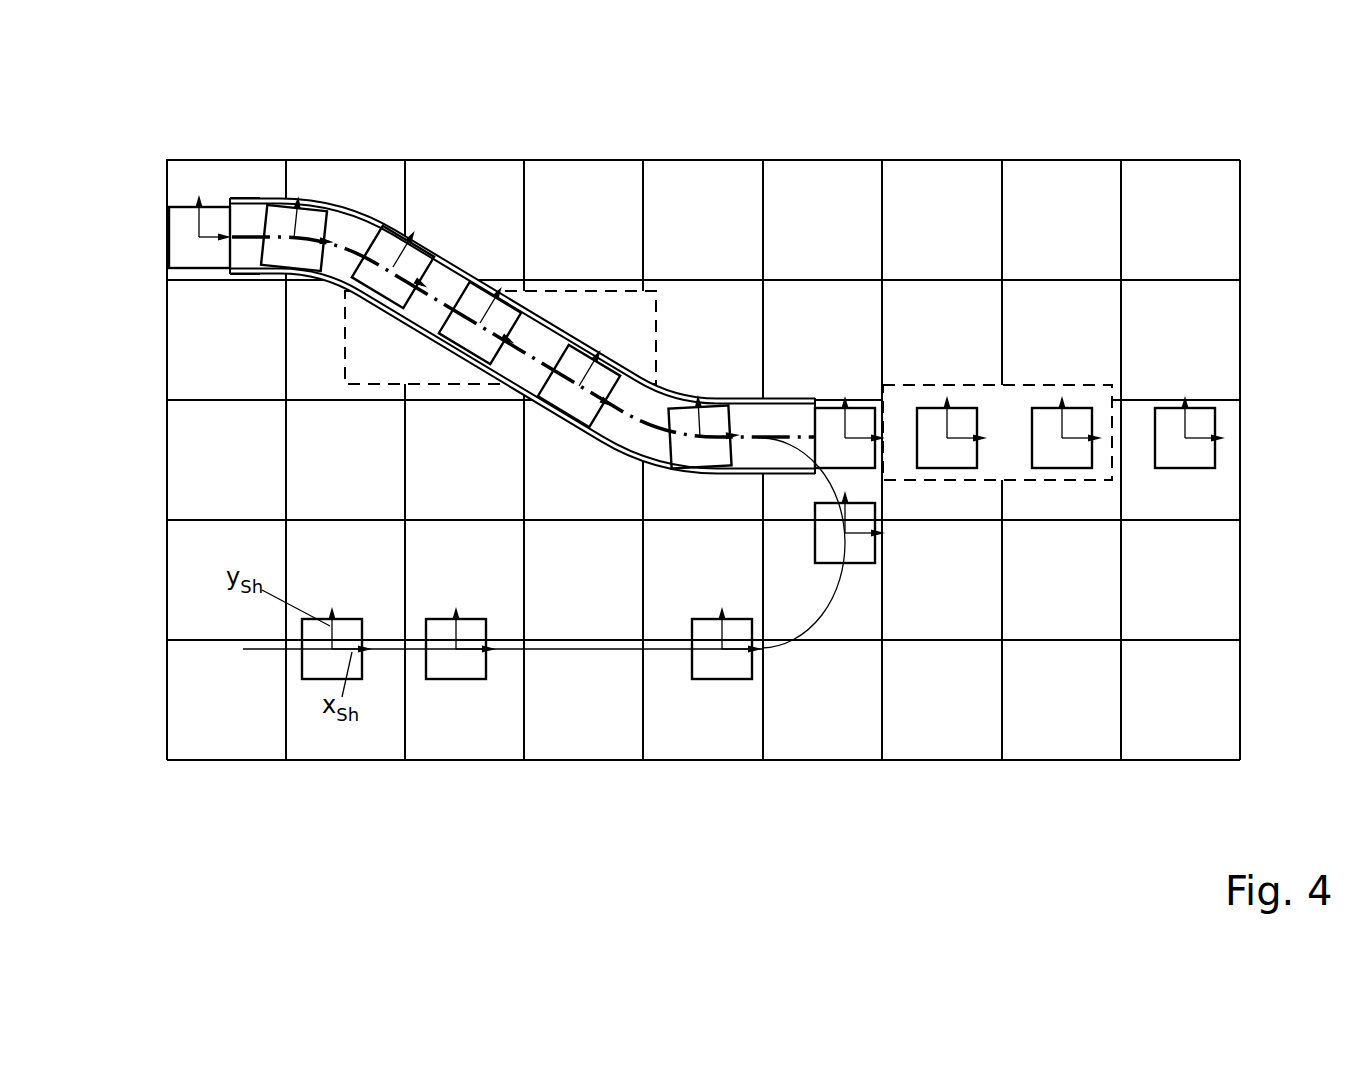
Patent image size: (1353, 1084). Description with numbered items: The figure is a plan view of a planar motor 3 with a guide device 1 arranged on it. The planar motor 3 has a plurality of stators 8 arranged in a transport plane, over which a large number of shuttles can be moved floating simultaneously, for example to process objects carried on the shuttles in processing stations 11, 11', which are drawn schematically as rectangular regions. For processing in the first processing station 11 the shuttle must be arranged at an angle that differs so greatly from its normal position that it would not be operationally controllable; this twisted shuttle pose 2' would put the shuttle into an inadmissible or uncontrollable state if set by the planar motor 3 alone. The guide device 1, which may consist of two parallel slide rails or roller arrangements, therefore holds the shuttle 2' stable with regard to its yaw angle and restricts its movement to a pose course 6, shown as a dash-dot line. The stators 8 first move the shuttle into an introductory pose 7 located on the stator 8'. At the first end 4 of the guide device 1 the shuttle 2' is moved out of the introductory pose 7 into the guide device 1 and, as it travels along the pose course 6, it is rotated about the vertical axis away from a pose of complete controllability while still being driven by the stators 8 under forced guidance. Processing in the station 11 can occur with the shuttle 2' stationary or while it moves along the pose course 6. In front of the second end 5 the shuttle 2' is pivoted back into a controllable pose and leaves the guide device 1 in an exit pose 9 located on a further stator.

The guide device 1 is at (360, 217).
The shuttle pose 2' is at (459, 356).
The planar motor 3 is at (140, 792).
The first end of the guide device 4 is at (235, 269).
The second end of the guide device 5 is at (792, 472).
The pose course 6 is at (479, 294).
The introductory pose 7 is at (196, 253).
The stators 8 is at (584, 744).
The stator of the introductory pose 8' is at (194, 199).
The exit pose 9 is at (822, 405).
The first processing station 11 is at (521, 234).
The second processing station 11' is at (1106, 398).